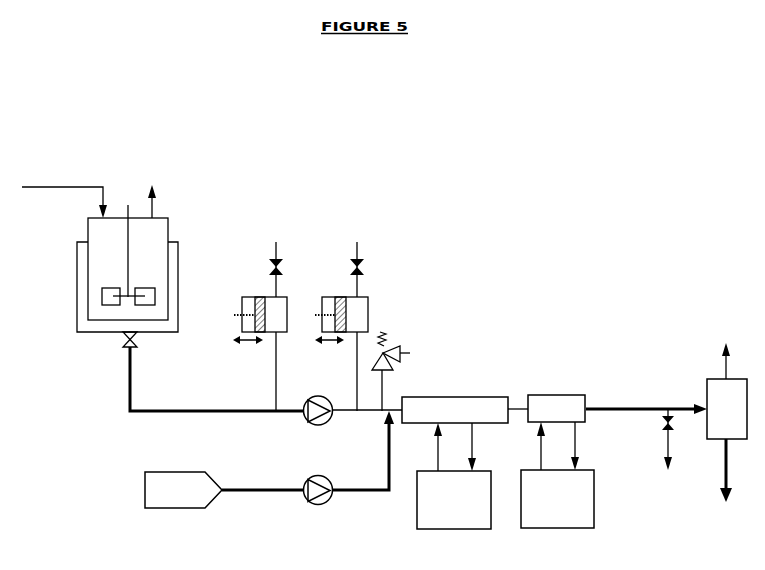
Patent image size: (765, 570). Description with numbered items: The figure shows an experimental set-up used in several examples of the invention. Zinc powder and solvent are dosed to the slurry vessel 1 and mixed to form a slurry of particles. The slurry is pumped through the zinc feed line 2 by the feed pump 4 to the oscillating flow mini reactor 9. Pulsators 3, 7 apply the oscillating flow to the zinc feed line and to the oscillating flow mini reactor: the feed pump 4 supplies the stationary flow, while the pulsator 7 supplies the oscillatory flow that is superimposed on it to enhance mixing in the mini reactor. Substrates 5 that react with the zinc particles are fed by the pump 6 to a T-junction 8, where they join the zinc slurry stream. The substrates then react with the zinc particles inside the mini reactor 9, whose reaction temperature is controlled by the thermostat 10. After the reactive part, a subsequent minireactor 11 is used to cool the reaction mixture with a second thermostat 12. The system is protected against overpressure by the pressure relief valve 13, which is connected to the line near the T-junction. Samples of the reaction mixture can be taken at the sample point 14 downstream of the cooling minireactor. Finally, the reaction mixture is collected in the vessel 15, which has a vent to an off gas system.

The slurry vessel 1 is at (100, 250).
The zinc feed line 2 is at (203, 374).
The pulsator 3 is at (260, 326).
The feed pump 4 is at (353, 423).
The substrates 5 is at (224, 490).
The pump 6 is at (319, 505).
The pulsator 7 is at (341, 326).
The T-junction 8 is at (363, 450).
The oscillating flow mini reactor 9 is at (465, 410).
The thermostat 10 is at (454, 476).
The subsequent minireactor 11 is at (556, 408).
The second thermostat 12 is at (557, 475).
The pressure relief valve 13 is at (397, 368).
The sample point 14 is at (653, 439).
The vessel 15 is at (667, 422).